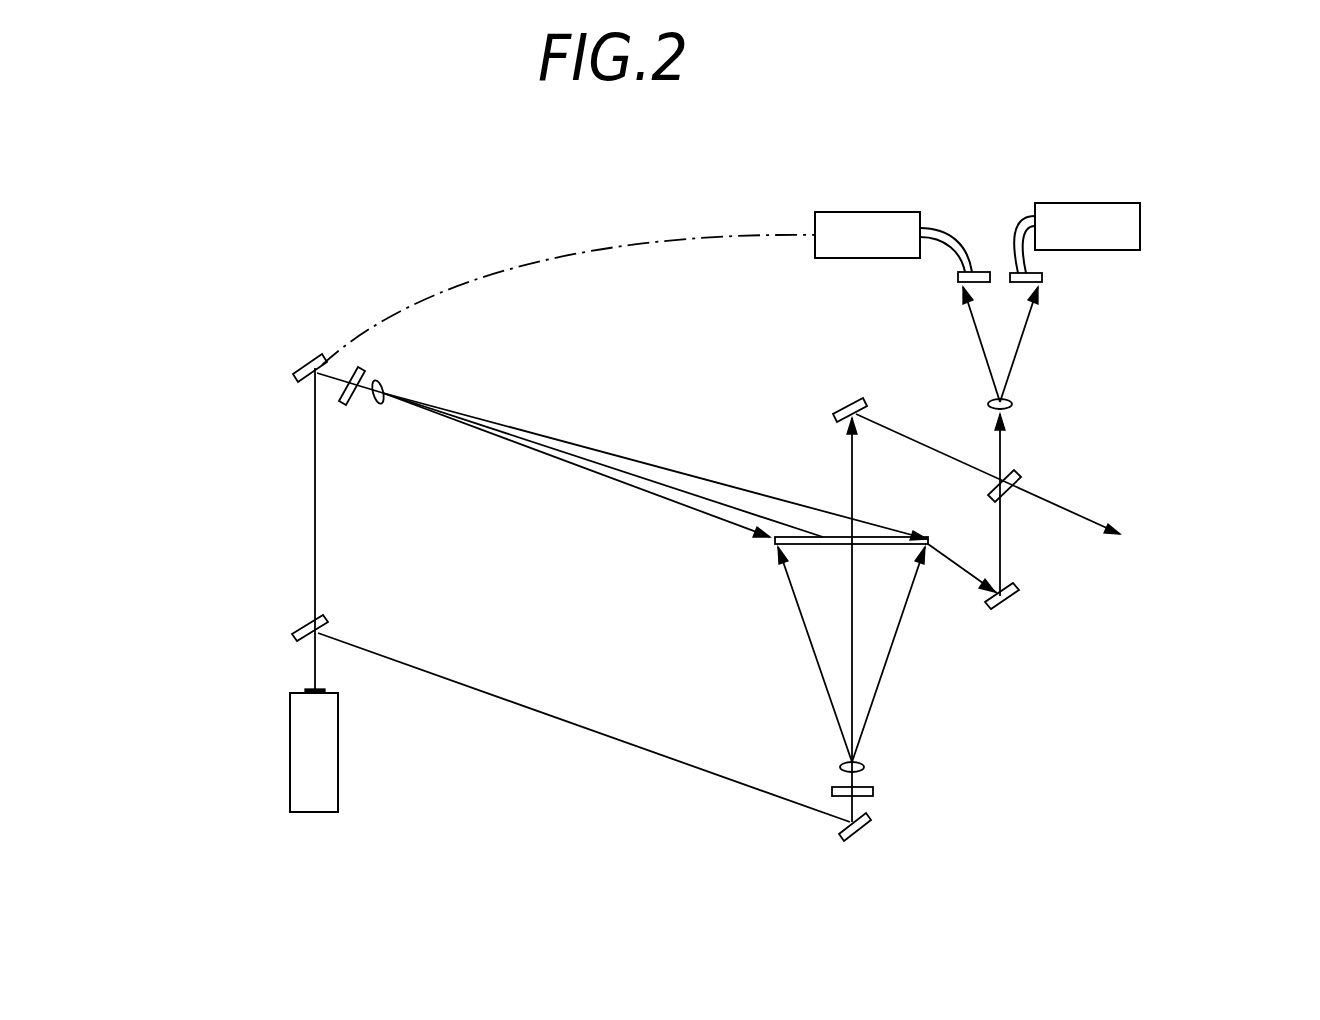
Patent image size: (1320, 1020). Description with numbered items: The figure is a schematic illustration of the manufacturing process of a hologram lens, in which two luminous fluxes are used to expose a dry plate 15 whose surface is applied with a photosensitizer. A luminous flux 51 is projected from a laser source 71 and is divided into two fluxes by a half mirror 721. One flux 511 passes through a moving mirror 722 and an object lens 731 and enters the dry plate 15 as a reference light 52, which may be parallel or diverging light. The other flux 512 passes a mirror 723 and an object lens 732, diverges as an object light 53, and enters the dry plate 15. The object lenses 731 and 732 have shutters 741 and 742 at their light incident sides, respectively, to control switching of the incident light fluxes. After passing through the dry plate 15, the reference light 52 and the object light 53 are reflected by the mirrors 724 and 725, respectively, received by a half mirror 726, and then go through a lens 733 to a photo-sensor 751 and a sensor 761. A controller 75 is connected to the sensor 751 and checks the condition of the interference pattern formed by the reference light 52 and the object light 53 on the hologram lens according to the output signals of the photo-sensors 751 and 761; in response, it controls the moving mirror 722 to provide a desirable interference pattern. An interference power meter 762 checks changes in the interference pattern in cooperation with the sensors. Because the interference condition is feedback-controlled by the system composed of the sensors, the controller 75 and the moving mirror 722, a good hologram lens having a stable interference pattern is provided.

The dry plate 15 is at (813, 545).
The luminous flux 51 is at (315, 660).
The one flux 511 is at (315, 470).
The other flux 512 is at (545, 718).
The reference light 52 is at (650, 455).
The object light 53 is at (892, 663).
The laser source 71 is at (315, 812).
The half mirror 721 is at (330, 622).
The moving mirror 722 is at (307, 365).
The mirror 723 is at (858, 835).
The mirror 724 is at (1012, 605).
The mirror 725 is at (848, 400).
The half mirror 726 is at (1013, 480).
The object lens 731 is at (382, 387).
The object lens 732 is at (865, 768).
The lens 733 is at (1012, 404).
The shutter 741 is at (345, 403).
The shutter 742 is at (873, 793).
The controller 75 is at (855, 212).
The photo-sensor 751 is at (977, 272).
The sensor 761 is at (1042, 278).
The interference power meter 762 is at (1140, 225).